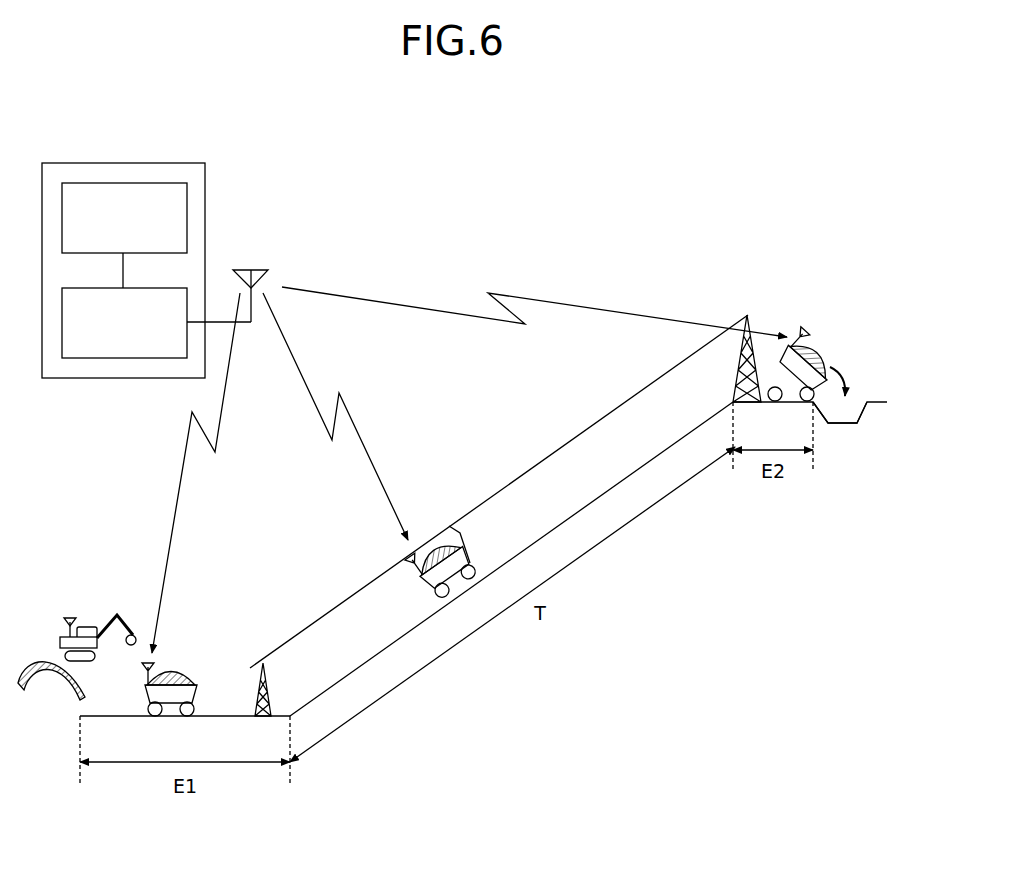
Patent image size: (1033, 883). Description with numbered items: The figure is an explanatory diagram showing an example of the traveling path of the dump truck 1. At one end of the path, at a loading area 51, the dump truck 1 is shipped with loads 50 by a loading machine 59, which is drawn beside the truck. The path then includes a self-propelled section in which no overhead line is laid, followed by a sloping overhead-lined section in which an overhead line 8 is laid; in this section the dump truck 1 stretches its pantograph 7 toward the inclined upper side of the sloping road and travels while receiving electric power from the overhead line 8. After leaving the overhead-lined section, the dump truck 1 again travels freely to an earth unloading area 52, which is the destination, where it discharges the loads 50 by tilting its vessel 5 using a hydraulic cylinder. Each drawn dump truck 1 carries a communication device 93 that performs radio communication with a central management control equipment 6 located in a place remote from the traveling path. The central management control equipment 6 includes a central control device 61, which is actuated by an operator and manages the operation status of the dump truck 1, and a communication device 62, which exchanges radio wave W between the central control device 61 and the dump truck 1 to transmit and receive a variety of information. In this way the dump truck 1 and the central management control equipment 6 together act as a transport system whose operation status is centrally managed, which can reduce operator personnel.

The dump truck 1 is at (479, 484).
The vessel 5 is at (190, 697).
The central management control equipment 6 is at (155, 271).
The pantograph 7 is at (466, 531).
The overhead line 8 is at (340, 599).
The loads 50 is at (172, 670).
The loading area 51 is at (47, 700).
The earth unloading area 52 is at (850, 412).
The loading machine 59 is at (86, 599).
The central control device 61 is at (143, 183).
The communication device 62 is at (95, 358).
The communication device 93 is at (140, 674).
The radio wave W is at (393, 303).